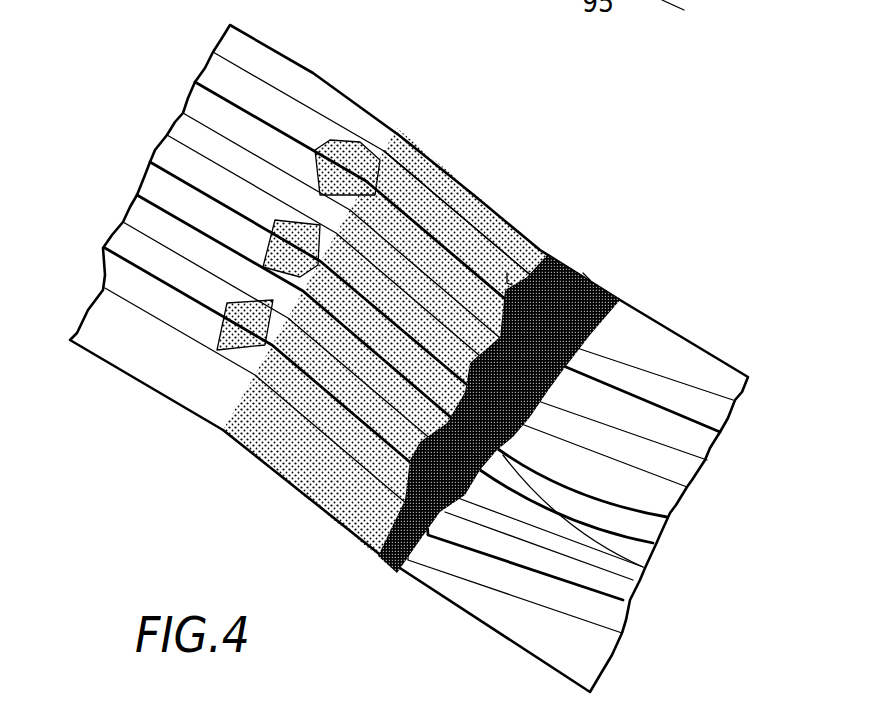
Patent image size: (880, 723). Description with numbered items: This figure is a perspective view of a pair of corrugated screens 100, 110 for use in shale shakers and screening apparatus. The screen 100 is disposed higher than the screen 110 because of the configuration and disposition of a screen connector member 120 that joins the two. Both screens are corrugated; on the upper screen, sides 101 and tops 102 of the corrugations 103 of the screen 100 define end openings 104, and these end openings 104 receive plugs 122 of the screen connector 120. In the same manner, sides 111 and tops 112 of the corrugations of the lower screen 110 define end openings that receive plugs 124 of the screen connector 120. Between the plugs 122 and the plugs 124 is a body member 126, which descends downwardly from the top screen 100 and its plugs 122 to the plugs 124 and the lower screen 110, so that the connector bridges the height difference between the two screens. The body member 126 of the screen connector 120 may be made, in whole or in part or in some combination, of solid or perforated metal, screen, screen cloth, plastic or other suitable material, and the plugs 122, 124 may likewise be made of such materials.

The screen 100 is at (307, 72).
The sides 101 is at (295, 272).
The tops 102 is at (357, 147).
The corrugations 103 is at (222, 80).
The end openings 104 is at (387, 162).
The screen 110 is at (615, 300).
The sides 111 is at (583, 275).
The tops 112 is at (508, 280).
The screen connector member 120 is at (467, 188).
The plugs 122 is at (330, 140).
The plugs 124 is at (438, 508).
The body member 126 is at (477, 220).